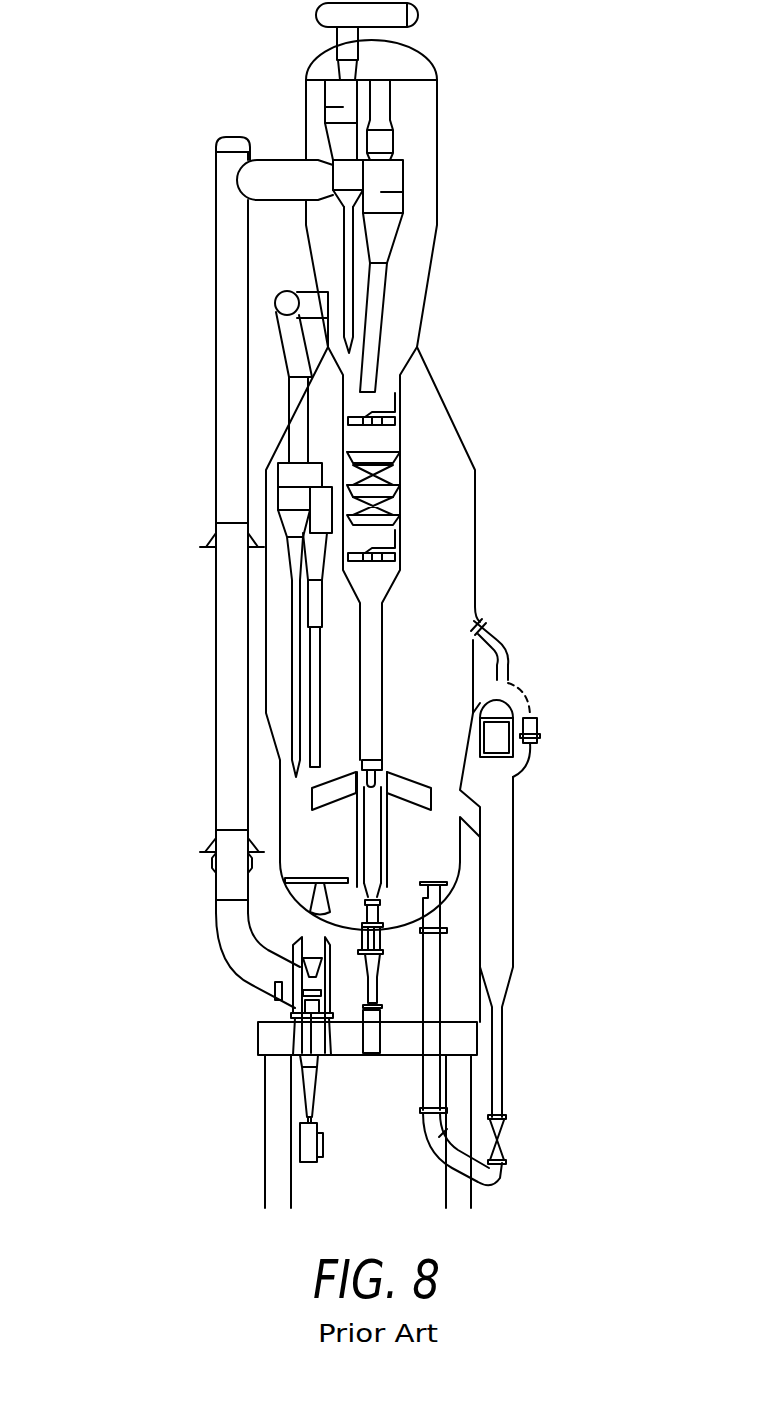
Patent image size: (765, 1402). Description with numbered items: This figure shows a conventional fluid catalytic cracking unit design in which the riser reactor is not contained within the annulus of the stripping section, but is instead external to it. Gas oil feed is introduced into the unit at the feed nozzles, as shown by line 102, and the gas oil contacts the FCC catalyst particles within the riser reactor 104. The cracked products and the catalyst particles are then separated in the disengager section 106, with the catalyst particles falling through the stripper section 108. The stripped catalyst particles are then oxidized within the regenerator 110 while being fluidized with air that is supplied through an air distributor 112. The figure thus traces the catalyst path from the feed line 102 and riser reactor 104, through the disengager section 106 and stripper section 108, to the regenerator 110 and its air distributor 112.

The line 102 is at (205, 857).
The riser reactor 104 is at (193, 338).
The disengager section 106 is at (408, 180).
The stripper section 108 is at (412, 515).
The regenerator 110 is at (487, 595).
The air distributor 112 is at (310, 867).